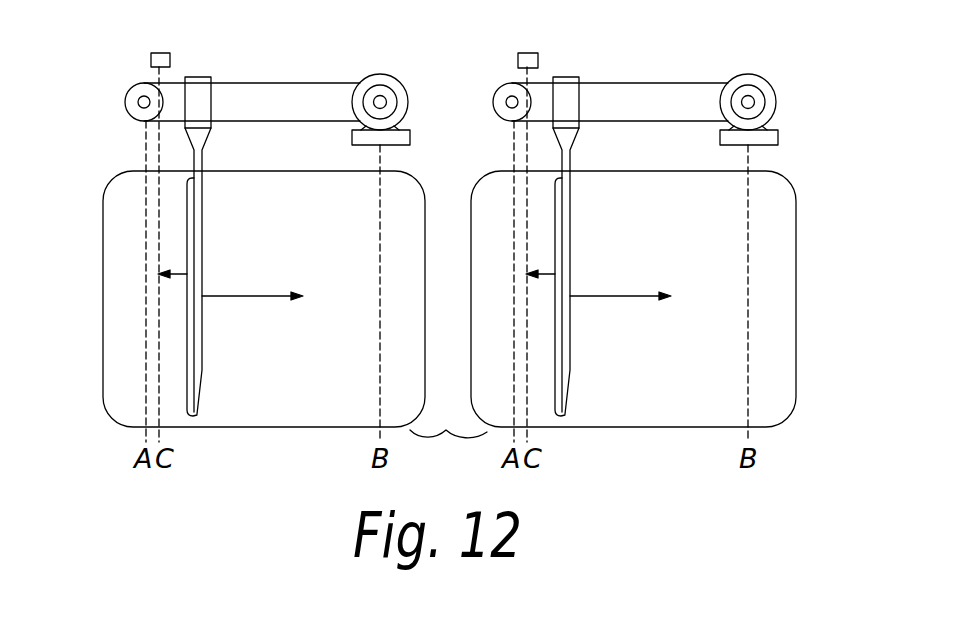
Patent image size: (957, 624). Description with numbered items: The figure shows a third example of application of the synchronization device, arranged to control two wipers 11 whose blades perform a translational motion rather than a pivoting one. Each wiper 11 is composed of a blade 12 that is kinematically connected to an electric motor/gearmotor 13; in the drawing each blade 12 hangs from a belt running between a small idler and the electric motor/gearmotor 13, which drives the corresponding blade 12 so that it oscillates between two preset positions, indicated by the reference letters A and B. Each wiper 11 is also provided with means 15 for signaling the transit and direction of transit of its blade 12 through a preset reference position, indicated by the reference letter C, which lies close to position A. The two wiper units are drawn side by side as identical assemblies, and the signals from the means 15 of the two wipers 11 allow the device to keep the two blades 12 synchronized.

The wiper 11 is at (102, 248).
The blade 12 is at (203, 231).
The electric motor/gearmotor 13 is at (392, 74).
The means for signaling 15 is at (158, 53).